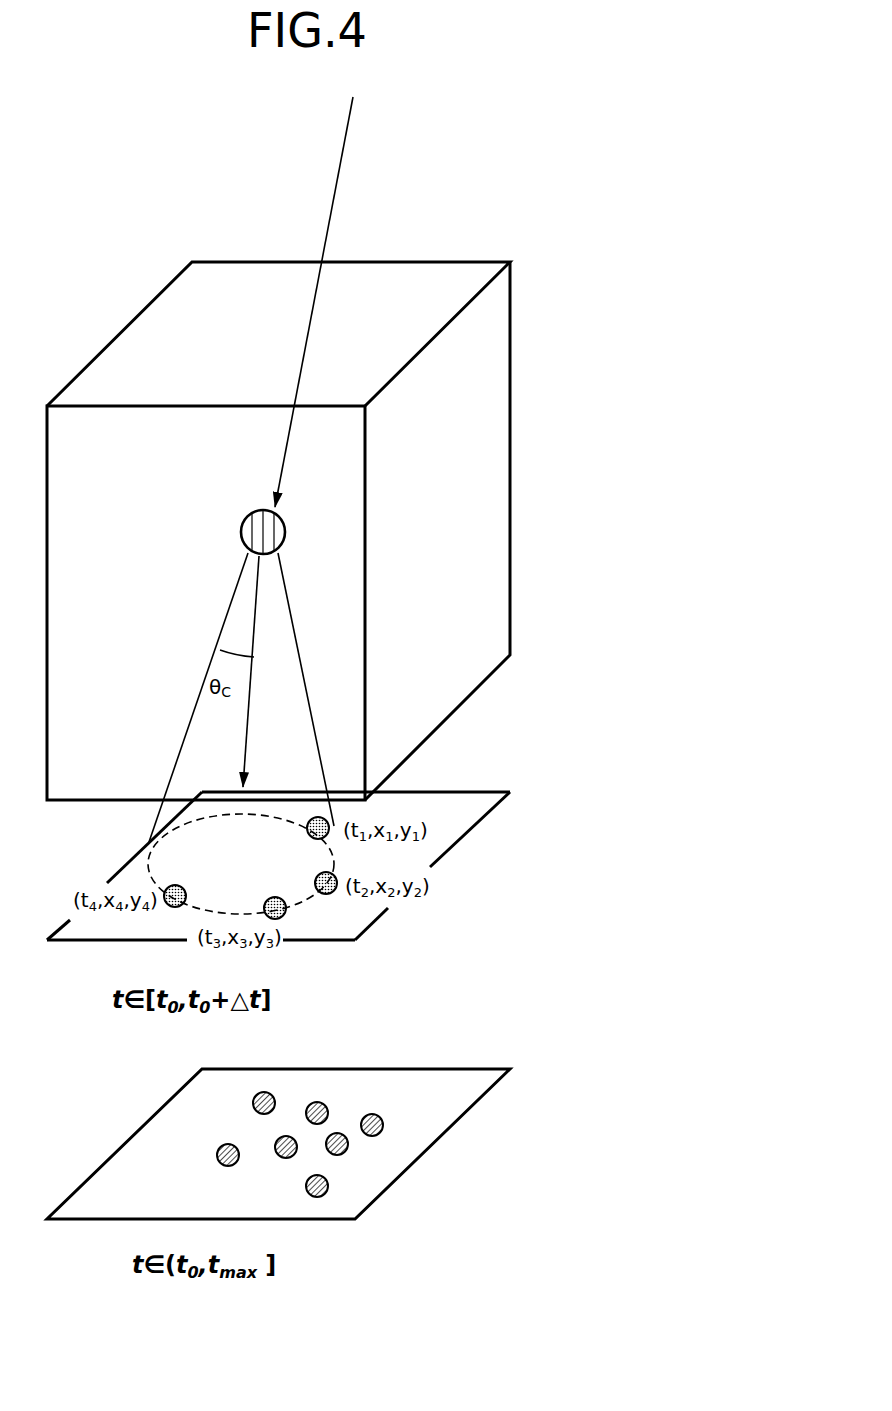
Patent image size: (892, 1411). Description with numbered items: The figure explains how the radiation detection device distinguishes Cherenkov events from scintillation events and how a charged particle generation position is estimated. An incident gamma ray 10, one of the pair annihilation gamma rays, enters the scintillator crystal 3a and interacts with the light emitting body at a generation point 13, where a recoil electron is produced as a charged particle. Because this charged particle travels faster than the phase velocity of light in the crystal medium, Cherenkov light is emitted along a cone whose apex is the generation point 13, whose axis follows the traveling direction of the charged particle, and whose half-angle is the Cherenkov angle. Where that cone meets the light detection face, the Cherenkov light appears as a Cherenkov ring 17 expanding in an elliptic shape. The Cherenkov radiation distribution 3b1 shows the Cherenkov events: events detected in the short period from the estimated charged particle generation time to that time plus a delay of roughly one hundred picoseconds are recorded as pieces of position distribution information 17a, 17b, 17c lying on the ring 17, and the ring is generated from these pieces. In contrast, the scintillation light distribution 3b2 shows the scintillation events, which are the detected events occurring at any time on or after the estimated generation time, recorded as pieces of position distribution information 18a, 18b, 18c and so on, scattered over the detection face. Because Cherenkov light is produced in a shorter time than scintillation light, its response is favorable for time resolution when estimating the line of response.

The incident gamma ray 10 is at (340, 162).
The scintillator crystal 3a is at (510, 309).
The generation point of the charged particle 13 is at (287, 525).
The Cherenkov ring 17 is at (276, 814).
The Cherenkov radiation distribution 3b1 is at (497, 807).
The position distribution information related to the Cherenkov events 17a is at (318, 840).
The position distribution information related to the Cherenkov events 17b is at (326, 895).
The position distribution information related to the Cherenkov events 17c is at (287, 902).
The scintillation light distribution 3b2 is at (490, 1093).
The position distribution information related to the scintillation events 18a is at (383, 1122).
The position distribution information related to the scintillation events 18b is at (348, 1142).
The position distribution information related to the scintillation events 18c is at (328, 1186).